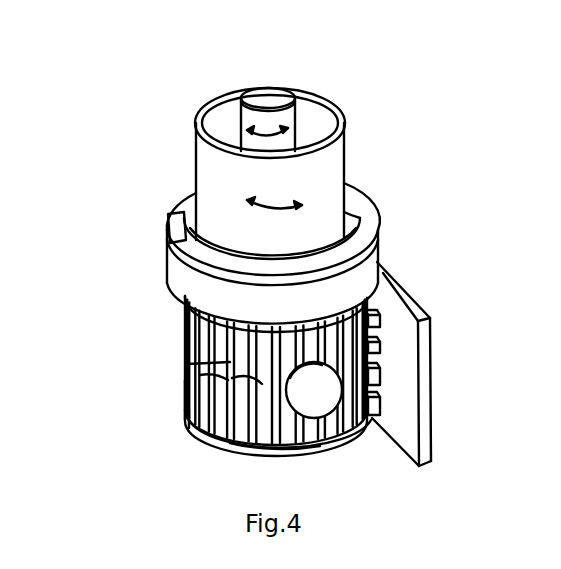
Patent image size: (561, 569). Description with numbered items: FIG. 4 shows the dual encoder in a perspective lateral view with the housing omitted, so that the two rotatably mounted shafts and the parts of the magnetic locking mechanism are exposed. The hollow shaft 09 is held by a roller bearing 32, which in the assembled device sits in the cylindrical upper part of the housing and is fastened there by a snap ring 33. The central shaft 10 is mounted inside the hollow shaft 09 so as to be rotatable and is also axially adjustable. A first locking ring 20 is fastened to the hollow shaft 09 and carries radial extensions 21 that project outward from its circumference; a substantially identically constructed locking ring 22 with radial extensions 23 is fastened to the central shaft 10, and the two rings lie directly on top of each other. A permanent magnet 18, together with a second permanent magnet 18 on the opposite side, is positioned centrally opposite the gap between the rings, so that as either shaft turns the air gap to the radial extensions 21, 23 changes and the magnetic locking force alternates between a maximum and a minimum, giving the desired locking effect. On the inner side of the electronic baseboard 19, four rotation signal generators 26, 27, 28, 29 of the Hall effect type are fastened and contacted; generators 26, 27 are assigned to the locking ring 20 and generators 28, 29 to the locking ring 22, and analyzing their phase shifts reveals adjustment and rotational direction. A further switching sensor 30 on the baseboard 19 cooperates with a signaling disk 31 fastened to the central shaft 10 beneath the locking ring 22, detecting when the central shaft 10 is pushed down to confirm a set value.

The hollow shaft 09 is at (328, 173).
The central shaft 10 is at (270, 98).
The snap ring 33 is at (373, 203).
The roller bearing 32 is at (187, 288).
The first locking ring 20 is at (178, 345).
The radial extensions 21 is at (187, 366).
The locking ring 22 is at (178, 407).
The radial extensions 23 is at (195, 432).
The signaling disk 31 is at (268, 450).
The permanent magnet 18 is at (327, 403).
The rotation signal generator 26 is at (378, 308).
The rotation signal generator 27 is at (380, 320).
The rotation signal generator 28 is at (380, 346).
The rotation signal generator 29 is at (380, 376).
The switching sensor 30 is at (380, 411).
The electronic baseboard 19 is at (428, 456).